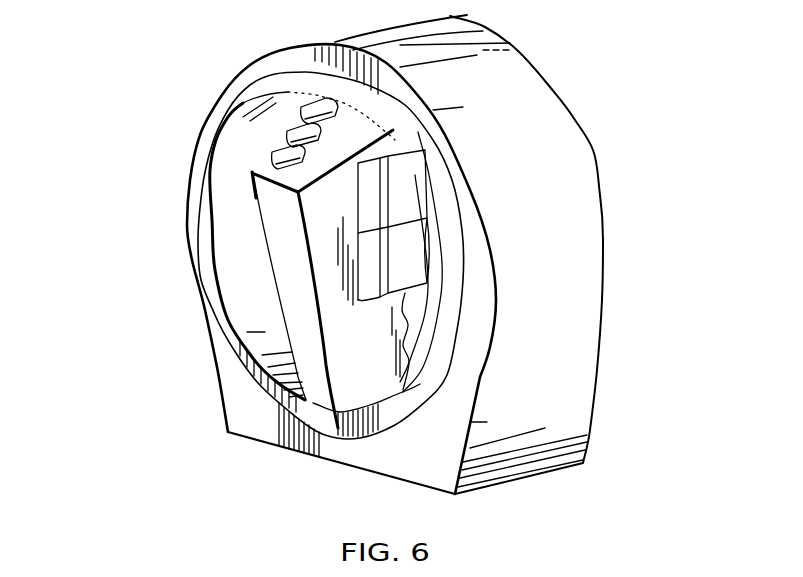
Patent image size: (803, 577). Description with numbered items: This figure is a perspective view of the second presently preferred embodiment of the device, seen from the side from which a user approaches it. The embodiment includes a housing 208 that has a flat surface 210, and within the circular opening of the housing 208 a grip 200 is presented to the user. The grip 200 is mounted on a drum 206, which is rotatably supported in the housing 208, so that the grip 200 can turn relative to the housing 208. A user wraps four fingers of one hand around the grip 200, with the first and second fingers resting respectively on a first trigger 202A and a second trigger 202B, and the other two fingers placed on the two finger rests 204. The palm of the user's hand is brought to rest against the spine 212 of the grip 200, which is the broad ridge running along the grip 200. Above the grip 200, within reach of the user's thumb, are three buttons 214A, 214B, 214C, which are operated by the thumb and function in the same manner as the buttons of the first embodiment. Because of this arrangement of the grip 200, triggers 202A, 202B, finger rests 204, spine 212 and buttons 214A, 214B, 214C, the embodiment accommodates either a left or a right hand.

The grip 200 is at (373, 357).
The first trigger 202A is at (405, 202).
The second trigger 202B is at (405, 258).
The finger rests 204 is at (407, 347).
The drum 206 is at (249, 313).
The housing 208 is at (557, 401).
The flat surface 210 is at (340, 463).
The spine 212 is at (278, 221).
The button 214A is at (303, 103).
The button 214B is at (288, 131).
The button 214C is at (273, 153).